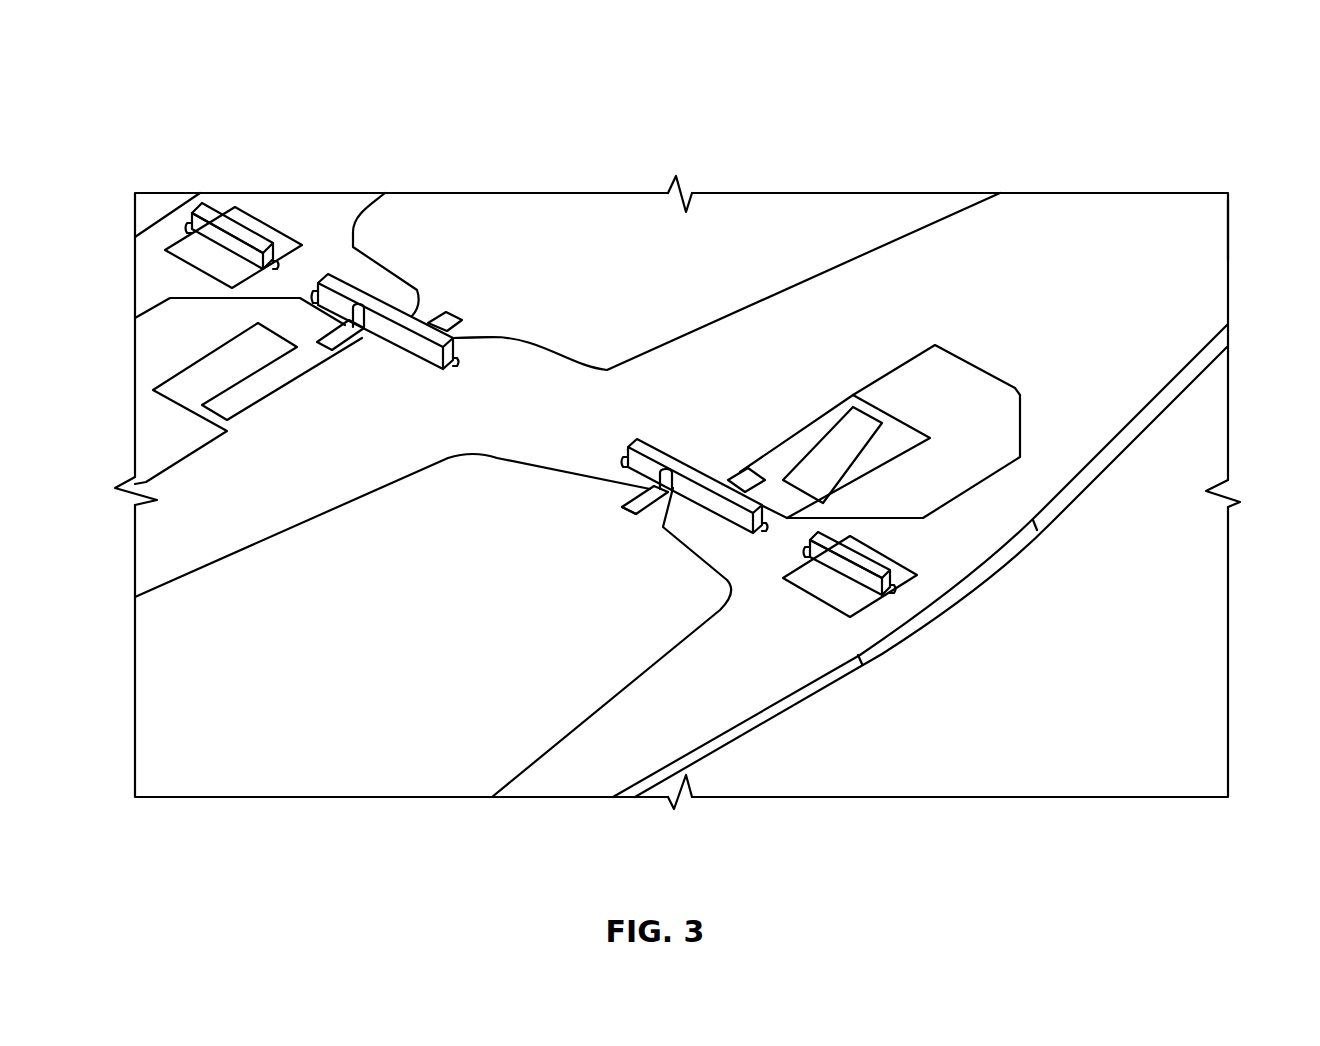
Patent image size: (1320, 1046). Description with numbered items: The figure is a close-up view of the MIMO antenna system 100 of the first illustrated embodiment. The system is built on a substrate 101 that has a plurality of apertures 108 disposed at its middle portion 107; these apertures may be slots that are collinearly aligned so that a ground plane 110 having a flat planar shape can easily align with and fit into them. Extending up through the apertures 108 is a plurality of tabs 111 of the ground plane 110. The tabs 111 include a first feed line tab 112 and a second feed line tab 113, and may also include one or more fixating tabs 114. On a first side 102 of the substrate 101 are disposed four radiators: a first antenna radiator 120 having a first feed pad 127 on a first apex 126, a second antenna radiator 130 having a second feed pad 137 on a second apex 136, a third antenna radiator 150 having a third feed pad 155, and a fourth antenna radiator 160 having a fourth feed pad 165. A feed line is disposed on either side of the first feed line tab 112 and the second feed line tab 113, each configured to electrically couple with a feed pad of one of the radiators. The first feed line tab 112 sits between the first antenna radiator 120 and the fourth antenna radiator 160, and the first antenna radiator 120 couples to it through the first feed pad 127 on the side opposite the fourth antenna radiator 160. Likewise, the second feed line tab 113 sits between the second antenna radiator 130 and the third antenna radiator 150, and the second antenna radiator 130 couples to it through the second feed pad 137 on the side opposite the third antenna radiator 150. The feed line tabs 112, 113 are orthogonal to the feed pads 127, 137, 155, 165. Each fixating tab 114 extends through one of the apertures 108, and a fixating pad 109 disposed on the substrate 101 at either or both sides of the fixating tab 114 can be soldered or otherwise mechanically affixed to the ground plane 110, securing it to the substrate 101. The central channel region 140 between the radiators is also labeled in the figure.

The MIMO antenna system 100 is at (118, 90).
The substrate 101 is at (1090, 204).
The first side 102 is at (1229, 230).
The middle portion 107 is at (900, 604).
The apertures 108 is at (192, 225).
The fixating pad 109 is at (240, 217).
The ground plane 110 is at (1050, 720).
The tabs 111 is at (348, 273).
The first feed line tab 112 is at (410, 290).
The second feed line tab 113 is at (628, 456).
The fixating tabs 114 is at (214, 213).
The first antenna radiator 120 is at (597, 196).
The first apex 126 is at (465, 328).
The first feed pad 127 is at (452, 313).
The second antenna radiator 130 is at (150, 665).
The second apex 136 is at (622, 498).
The second feed pad 137 is at (640, 508).
The channel 140 is at (506, 405).
The third antenna radiator 150 is at (968, 372).
The third feed pad 155 is at (750, 473).
The fourth antenna radiator 160 is at (150, 423).
The fourth feed pad 165 is at (330, 344).